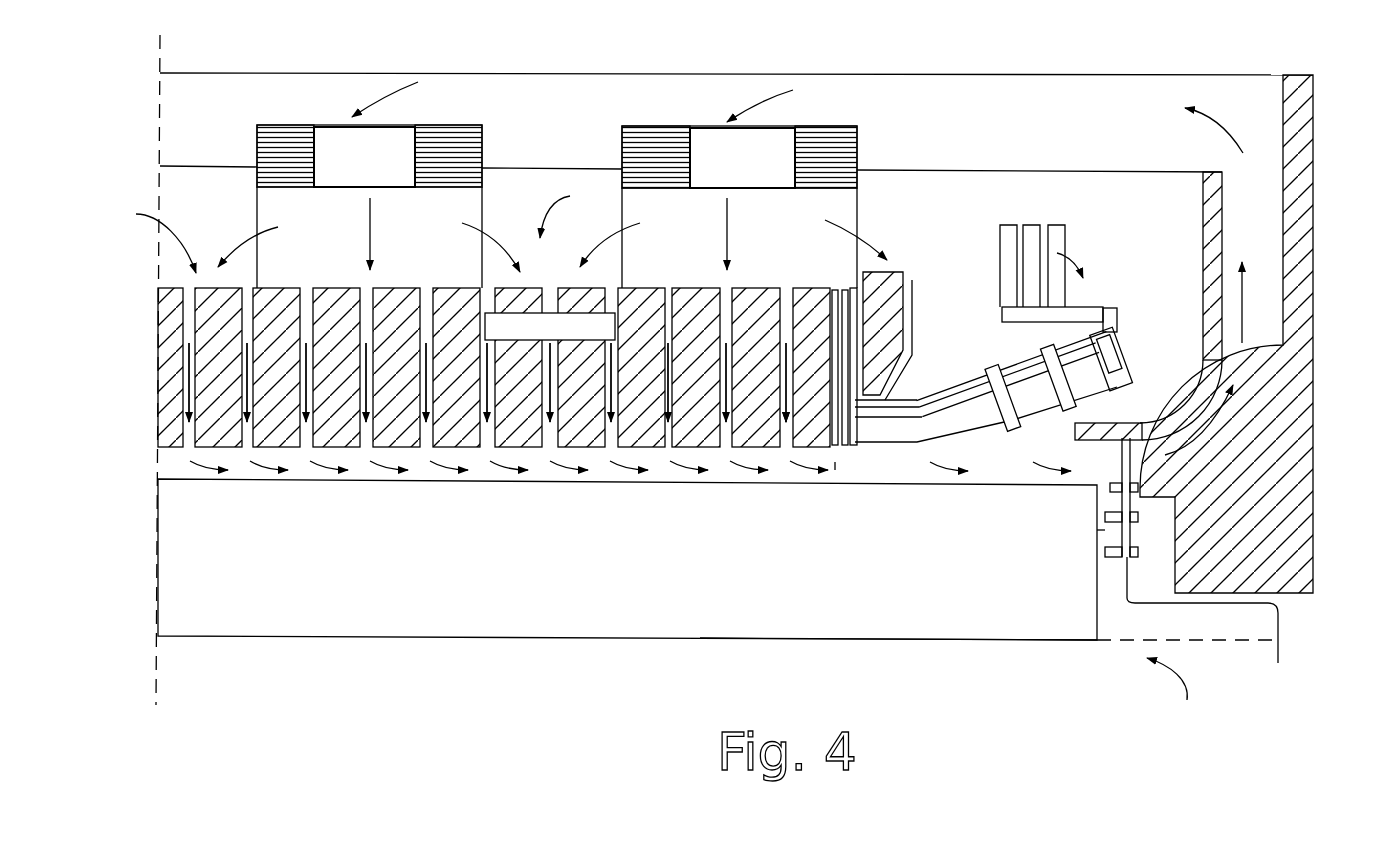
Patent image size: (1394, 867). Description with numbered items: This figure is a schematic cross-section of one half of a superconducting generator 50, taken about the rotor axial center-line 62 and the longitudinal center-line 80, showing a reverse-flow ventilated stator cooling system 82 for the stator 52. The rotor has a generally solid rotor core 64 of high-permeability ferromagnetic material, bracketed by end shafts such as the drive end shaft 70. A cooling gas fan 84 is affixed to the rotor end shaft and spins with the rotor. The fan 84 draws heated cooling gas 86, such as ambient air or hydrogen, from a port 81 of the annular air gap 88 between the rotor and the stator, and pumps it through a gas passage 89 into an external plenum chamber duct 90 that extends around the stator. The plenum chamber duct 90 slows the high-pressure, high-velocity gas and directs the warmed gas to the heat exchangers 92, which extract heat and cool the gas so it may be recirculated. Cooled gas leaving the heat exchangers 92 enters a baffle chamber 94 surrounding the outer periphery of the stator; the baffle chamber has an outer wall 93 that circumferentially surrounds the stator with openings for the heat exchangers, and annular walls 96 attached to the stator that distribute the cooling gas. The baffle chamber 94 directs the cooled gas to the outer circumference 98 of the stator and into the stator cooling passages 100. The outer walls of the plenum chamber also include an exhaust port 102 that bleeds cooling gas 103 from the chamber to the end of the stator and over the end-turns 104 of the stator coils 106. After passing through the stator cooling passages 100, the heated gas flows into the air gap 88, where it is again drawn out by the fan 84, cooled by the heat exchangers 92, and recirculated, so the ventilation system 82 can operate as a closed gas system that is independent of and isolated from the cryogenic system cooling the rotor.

The synchronous generator machine 50 is at (1172, 692).
The stator 52 is at (157, 362).
The rotor axial center-line 62 is at (860, 640).
The solid rotor core 64 is at (627, 559).
The drive end shaft 70 is at (1250, 628).
The longitudinal center-line 80 is at (157, 539).
The port 81 is at (836, 466).
The ventilated stator cooling system 82 is at (1007, 97).
The cooling gas fan 84 is at (1135, 535).
The heated cooling gas 86 is at (385, 82).
The annular air gap 88 is at (157, 463).
The gas passage 89 is at (1265, 215).
The plenum chamber duct 90 is at (1139, 269).
The heat exchanger 92 is at (257, 125).
The outer wall 93 is at (160, 165).
The baffle chamber 94 is at (569, 210).
The annular walls 96 is at (257, 196).
The outer circumference of the stator 98 is at (152, 238).
The stator cooling passages 100 is at (430, 288).
The exhaust port 102 is at (857, 226).
The bled cooling gas 103 is at (887, 260).
The end-turns 104 is at (1013, 365).
The stator coils 106 is at (876, 437).